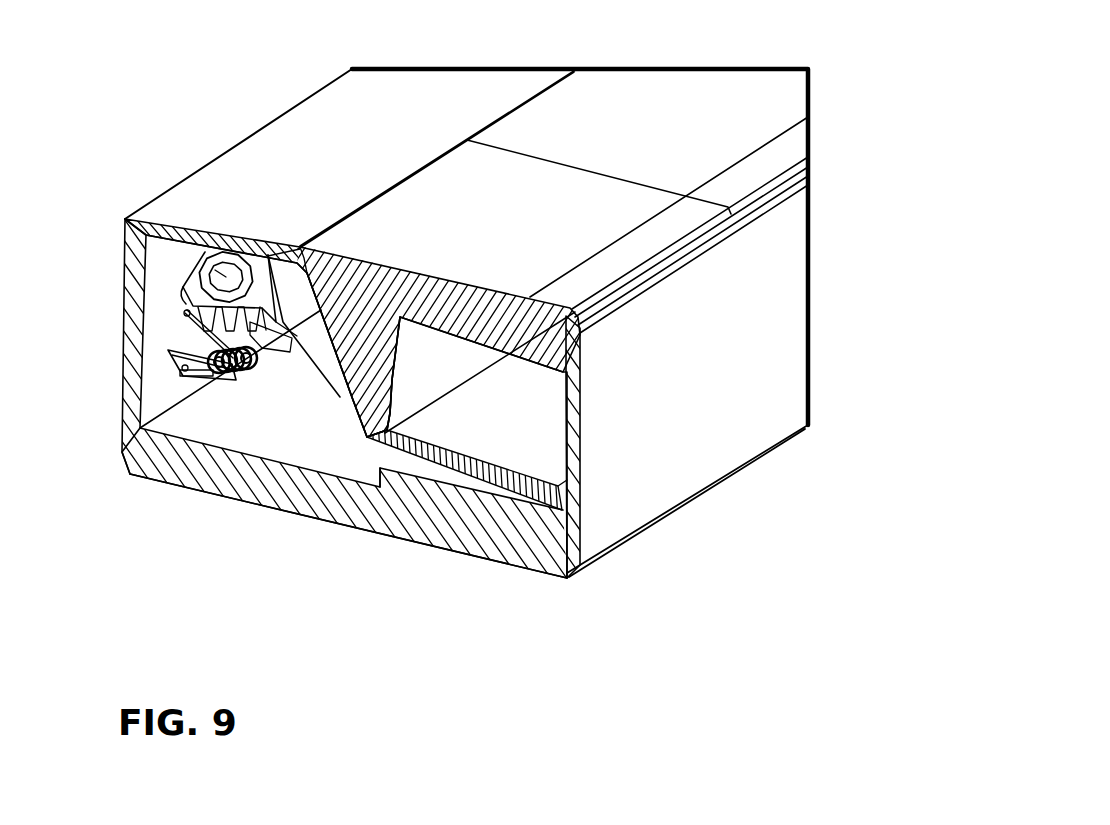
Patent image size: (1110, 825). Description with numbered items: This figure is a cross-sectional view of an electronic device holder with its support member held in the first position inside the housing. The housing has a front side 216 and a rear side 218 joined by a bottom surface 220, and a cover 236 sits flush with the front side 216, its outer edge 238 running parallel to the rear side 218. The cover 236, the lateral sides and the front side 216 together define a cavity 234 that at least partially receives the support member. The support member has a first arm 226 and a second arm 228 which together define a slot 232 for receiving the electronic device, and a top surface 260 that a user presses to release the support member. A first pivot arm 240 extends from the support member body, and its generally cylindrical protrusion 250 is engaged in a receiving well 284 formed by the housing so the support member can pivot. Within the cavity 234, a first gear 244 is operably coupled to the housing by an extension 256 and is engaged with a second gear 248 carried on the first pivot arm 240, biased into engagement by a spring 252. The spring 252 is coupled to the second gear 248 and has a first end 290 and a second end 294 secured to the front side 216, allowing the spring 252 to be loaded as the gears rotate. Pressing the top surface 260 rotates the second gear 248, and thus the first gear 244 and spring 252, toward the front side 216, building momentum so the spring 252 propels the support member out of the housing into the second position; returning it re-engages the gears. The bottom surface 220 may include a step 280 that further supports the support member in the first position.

The front side 216 is at (135, 342).
The rear side 218 is at (580, 427).
The bottom surface 220 is at (323, 497).
The first arm 226 is at (520, 327).
The second arm 228 is at (587, 557).
The slot 232 is at (517, 405).
The cavity 234 is at (173, 383).
The cover 236 is at (222, 275).
The outer edge 238 is at (413, 168).
The first pivot arm 240 is at (340, 393).
The first gear 244 is at (290, 338).
The second gear 248 is at (185, 280).
The protrusion 250 is at (178, 265).
The spring 252 is at (240, 380).
The extension 256 is at (168, 350).
The top surface 260 is at (711, 133).
The step 280 is at (455, 497).
The receiving well 284 is at (253, 262).
The first end 290 is at (183, 314).
The second end 294 is at (180, 372).